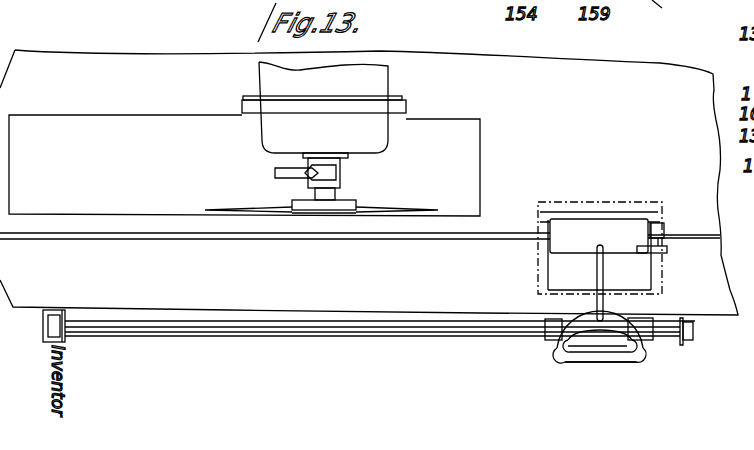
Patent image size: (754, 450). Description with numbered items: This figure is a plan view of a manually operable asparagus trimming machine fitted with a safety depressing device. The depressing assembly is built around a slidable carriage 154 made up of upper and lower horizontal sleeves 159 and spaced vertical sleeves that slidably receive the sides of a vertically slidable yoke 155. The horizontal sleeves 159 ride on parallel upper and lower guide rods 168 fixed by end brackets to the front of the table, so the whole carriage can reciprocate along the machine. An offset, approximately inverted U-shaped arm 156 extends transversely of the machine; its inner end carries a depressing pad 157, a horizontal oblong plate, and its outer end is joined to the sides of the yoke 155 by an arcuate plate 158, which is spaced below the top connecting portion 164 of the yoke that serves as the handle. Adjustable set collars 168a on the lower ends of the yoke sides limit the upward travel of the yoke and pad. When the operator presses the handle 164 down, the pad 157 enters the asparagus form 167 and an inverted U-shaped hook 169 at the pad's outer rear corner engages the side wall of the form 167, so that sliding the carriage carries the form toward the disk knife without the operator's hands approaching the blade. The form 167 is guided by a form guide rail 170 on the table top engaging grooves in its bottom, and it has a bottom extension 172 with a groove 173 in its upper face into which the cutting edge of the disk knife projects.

The slidable carriage 154 is at (545, 340).
The vertically slidable yoke 155 is at (579, 366).
The offset inverted U-shaped arm 156 is at (602, 263).
The depressing pad 157 is at (596, 232).
The arcuate plate 158 is at (625, 355).
The horizontal sleeves 159 is at (648, 322).
The top connecting portion of the yoke 164 is at (608, 355).
The asparagus form 167 is at (538, 256).
The guide rods 168 is at (243, 331).
The adjustable set collars 168a is at (679, 12).
The inverted U-shaped hook 169 is at (664, 240).
The form guide rail 170 is at (430, 240).
The bottom extension 172 is at (549, 203).
The groove 173 is at (567, 212).